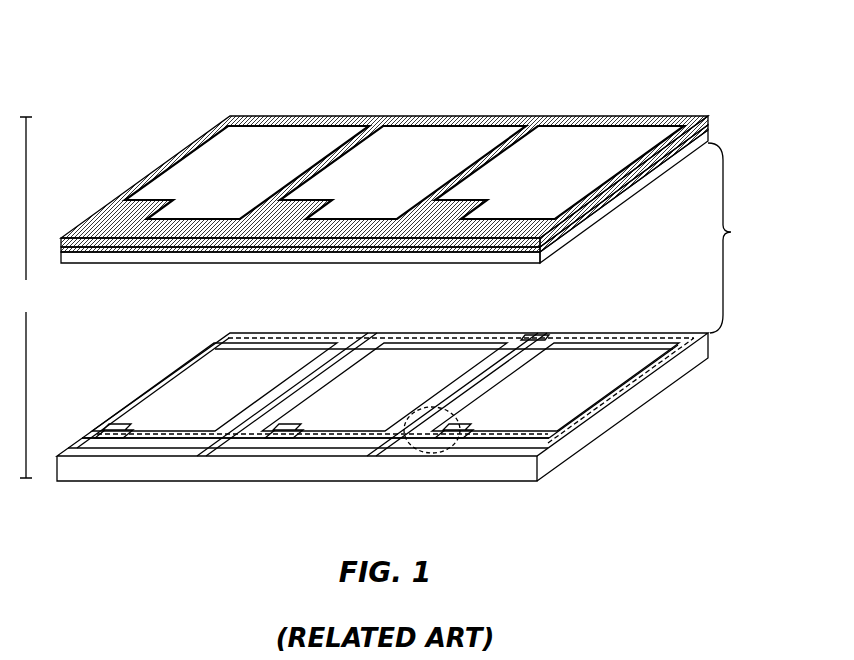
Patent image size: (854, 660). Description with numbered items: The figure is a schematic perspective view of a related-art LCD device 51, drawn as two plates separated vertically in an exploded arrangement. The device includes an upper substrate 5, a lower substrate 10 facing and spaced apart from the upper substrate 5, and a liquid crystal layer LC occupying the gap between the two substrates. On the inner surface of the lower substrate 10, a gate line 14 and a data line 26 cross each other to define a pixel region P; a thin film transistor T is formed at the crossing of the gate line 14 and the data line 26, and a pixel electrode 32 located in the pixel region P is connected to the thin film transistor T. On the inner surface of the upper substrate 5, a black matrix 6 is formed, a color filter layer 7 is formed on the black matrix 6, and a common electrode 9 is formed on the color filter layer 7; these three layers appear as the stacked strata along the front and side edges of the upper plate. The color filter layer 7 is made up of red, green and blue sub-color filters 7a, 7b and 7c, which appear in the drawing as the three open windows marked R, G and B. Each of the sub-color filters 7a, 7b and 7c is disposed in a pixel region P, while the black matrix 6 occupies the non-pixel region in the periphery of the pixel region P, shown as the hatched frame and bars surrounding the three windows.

The upper substrate 5 is at (386, 133).
The black matrix 6 is at (668, 165).
The color filter layer 7 is at (384, 129).
The red sub-color filter 7a is at (247, 141).
The green sub-color filter 7b is at (403, 142).
The blue sub-color filter 7c is at (559, 141).
The common electrode 9 is at (650, 180).
The lower substrate 10 is at (400, 382).
The gate line 14 is at (542, 443).
The data line 26 is at (523, 335).
The pixel electrode 32 is at (603, 412).
The LCD device 51 is at (26, 297).
The liquid crystal layer LC is at (733, 238).
The pixel region P is at (652, 375).
The thin film transistor T is at (462, 417).
The red sub-pixel R is at (236, 164).
The green sub-pixel G is at (399, 166).
The blue sub-pixel B is at (555, 168).